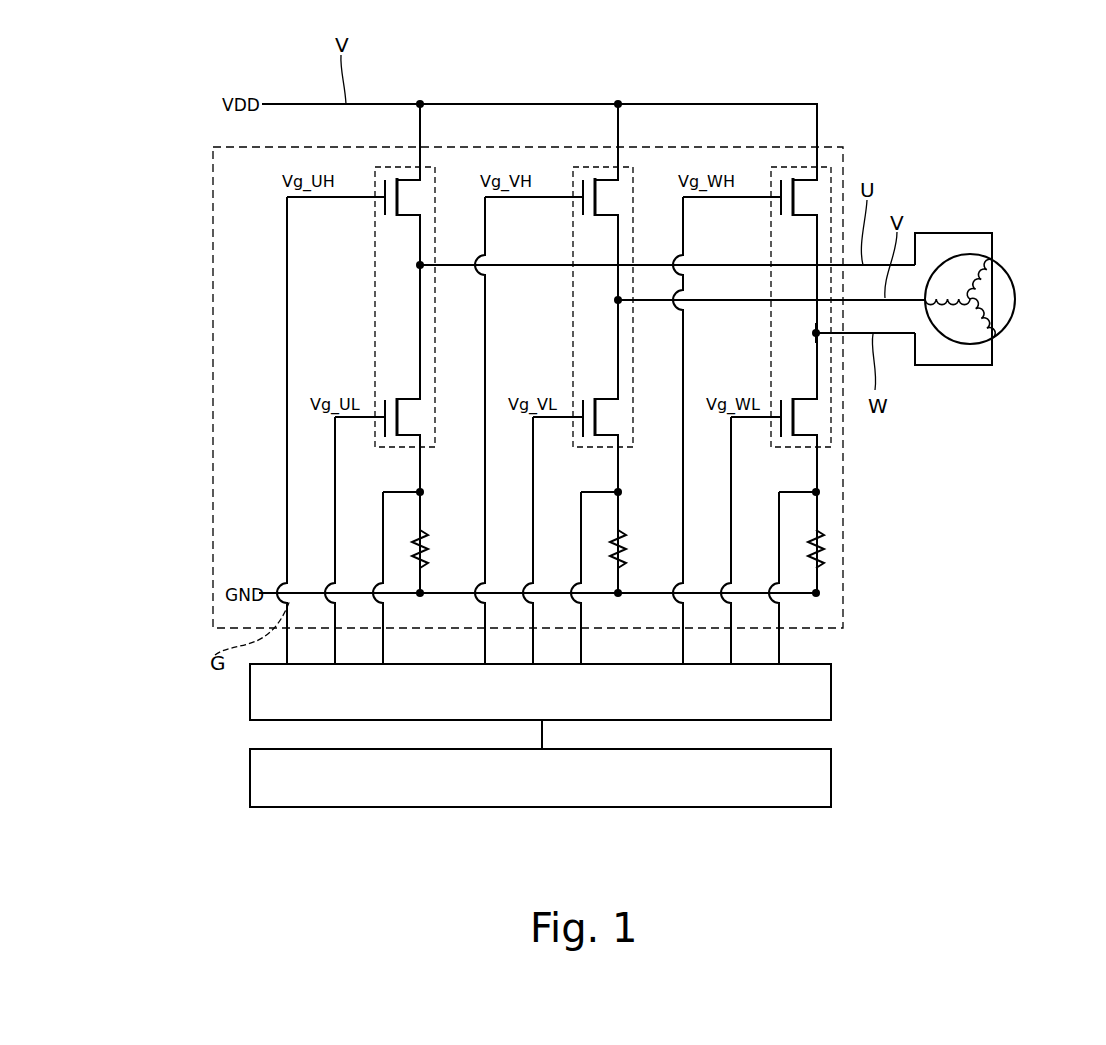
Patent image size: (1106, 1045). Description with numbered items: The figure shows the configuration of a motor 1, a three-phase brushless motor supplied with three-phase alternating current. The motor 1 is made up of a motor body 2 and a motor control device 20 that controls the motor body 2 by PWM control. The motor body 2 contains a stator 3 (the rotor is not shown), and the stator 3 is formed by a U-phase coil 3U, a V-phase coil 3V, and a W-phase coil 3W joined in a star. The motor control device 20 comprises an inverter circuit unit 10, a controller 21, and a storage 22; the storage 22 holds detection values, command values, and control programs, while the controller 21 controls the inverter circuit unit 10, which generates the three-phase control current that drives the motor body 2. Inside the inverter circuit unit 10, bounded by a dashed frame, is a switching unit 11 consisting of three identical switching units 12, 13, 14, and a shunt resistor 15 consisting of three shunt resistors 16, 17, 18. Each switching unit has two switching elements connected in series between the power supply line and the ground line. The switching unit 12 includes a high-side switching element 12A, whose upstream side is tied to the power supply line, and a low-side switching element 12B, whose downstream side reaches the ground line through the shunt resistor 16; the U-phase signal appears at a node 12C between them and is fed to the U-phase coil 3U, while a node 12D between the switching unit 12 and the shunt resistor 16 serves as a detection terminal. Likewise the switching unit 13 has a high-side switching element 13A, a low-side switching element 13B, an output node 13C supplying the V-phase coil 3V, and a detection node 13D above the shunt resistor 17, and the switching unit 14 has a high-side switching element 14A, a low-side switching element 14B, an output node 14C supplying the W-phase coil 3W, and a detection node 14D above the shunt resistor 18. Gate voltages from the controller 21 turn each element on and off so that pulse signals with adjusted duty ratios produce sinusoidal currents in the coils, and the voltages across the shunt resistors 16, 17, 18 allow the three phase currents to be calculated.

The motor 1 is at (849, 118).
The motor body 2 is at (997, 215).
The stator 3 is at (1015, 299).
The U-phase coil 3U is at (996, 282).
The V-phase coil 3V is at (952, 303).
The W-phase coil 3W is at (990, 320).
The inverter circuit unit 10 is at (212, 198).
The switching unit 11 is at (160, 250).
The switching unit 12 is at (375, 287).
The switching unit 13 is at (573, 312).
The switching unit 14 is at (771, 335).
The high-side switching element 12A is at (385, 207).
The low-side switching element 12B is at (385, 402).
The node 12C is at (418, 265).
The node 12D is at (418, 492).
The high-side switching element 13A is at (583, 207).
The low-side switching element 13B is at (583, 402).
The node 13C is at (617, 299).
The node 13D is at (616, 492).
The high-side switching element 14A is at (781, 207).
The low-side switching element 14B is at (781, 402).
The node 14C is at (815, 333).
The node 14D is at (814, 492).
The shunt resistor 15 is at (920, 478).
The shunt resistor 16 is at (425, 530).
The shunt resistor 17 is at (622, 530).
The shunt resistor 18 is at (828, 537).
The motor control device 20 is at (181, 474).
The controller 21 is at (833, 688).
The storage 22 is at (833, 775).